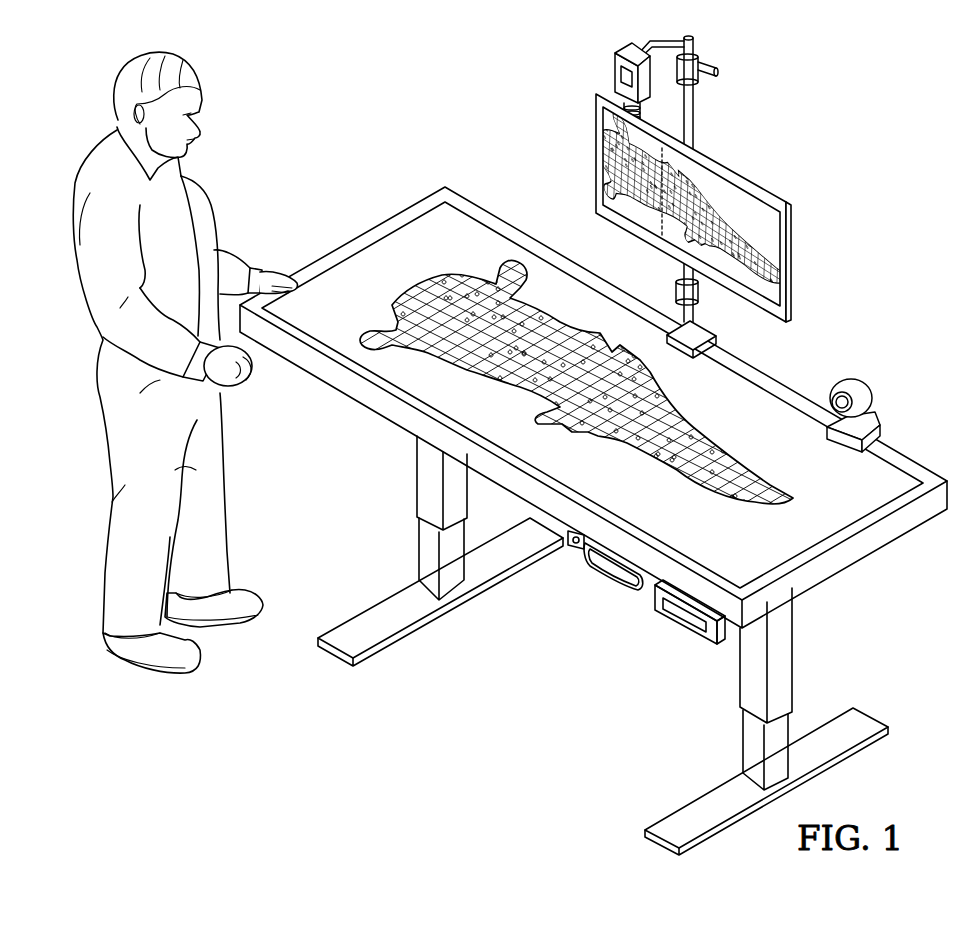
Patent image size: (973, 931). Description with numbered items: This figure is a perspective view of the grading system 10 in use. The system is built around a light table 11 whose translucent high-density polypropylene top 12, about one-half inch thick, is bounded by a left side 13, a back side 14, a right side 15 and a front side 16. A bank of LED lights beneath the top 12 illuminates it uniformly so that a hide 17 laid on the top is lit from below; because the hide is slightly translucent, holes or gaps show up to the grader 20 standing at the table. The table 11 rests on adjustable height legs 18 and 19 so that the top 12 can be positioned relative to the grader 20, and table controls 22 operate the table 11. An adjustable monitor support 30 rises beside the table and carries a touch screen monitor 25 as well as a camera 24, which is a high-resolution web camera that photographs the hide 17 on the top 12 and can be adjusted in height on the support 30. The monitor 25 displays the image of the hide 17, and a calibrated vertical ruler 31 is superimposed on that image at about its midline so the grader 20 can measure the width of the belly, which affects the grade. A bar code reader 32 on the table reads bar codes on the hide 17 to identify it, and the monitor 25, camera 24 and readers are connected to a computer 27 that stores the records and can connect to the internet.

The grading system 10 is at (333, 70).
The light table 11 is at (593, 521).
The translucent top 12 is at (866, 492).
The left side 13 is at (385, 220).
The back side 14 is at (508, 223).
The right side 15 is at (888, 532).
The front side 16 is at (355, 388).
The hide 17 is at (697, 432).
The adjustable height leg 18 is at (417, 475).
The adjustable height leg 19 is at (783, 658).
The grader 20 is at (100, 170).
The table controls 22 is at (612, 580).
The camera 24 is at (615, 72).
The touch screen monitor 25 is at (686, 197).
The computer 27 is at (685, 632).
The monitor support 30 is at (693, 113).
The vertical ruler 31 is at (652, 225).
The bar code reader 32 is at (855, 382).